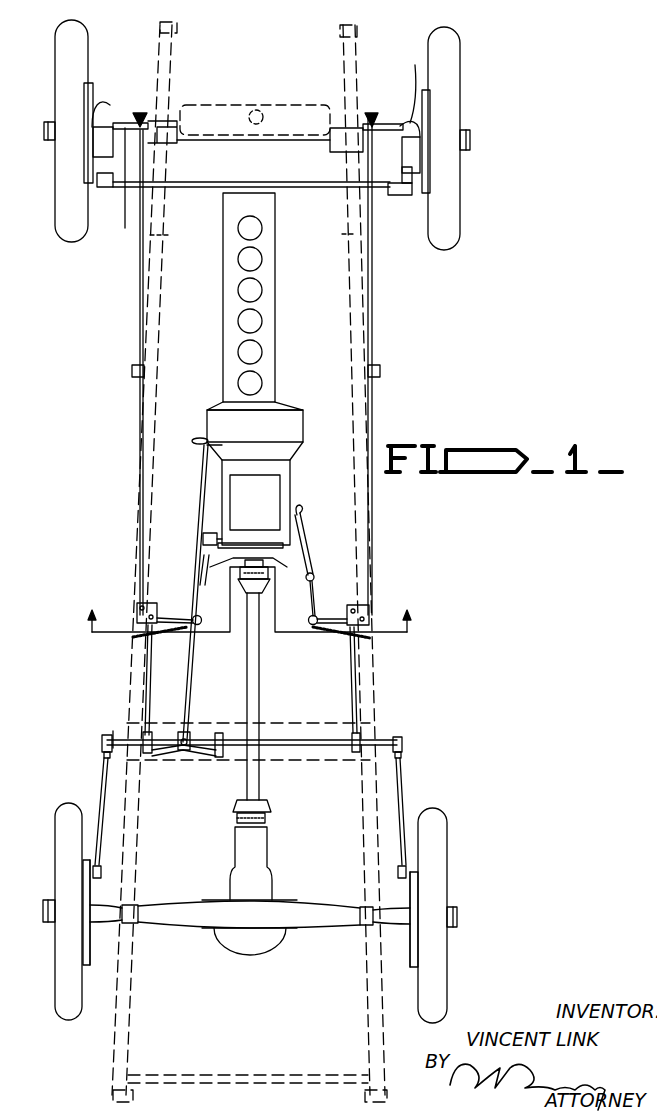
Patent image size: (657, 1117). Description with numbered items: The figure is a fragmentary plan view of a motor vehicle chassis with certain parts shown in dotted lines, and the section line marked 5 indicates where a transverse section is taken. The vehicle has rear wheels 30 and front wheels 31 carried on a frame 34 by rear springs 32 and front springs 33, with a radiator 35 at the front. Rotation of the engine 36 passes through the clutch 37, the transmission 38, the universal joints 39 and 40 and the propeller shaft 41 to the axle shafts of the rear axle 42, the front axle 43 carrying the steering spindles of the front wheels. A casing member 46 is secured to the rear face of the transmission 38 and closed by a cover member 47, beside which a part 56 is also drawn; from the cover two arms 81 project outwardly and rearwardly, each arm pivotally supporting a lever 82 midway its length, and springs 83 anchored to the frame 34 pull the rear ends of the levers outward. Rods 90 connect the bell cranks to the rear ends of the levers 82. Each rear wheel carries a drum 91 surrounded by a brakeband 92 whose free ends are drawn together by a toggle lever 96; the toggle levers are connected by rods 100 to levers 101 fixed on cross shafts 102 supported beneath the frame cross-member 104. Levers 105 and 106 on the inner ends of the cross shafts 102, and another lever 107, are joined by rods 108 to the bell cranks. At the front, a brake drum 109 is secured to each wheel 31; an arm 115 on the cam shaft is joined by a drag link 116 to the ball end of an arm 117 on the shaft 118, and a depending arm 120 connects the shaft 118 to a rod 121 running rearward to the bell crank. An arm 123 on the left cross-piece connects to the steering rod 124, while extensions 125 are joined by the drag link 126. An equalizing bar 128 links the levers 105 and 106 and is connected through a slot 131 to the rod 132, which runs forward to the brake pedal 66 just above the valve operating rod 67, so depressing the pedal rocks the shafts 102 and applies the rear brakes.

The section line 5- 5 is at (250, 599).
The rear wheels 30 is at (55, 835).
The front wheels 31 is at (57, 46).
The rear springs 32 is at (115, 1030).
The front springs 33 is at (167, 213).
The frame 34 is at (157, 305).
The radiator 35 is at (302, 107).
The engine 36 is at (277, 271).
The clutch 37 is at (304, 425).
The transmission 38 is at (291, 473).
The universal joint 39 is at (266, 594).
The universal joint 40 is at (268, 812).
The propeller shaft 41 is at (260, 680).
The rear axle 42 is at (175, 924).
The front axle 43 is at (218, 143).
The casing member 46 is at (284, 546).
The cover member 47 is at (288, 565).
The bracket 56 is at (203, 539).
The brake pedal 66 is at (198, 452).
The valve operating rod 67 is at (205, 488).
The arms 81 is at (203, 566).
The levers 82 is at (200, 626).
The springs 83 is at (170, 636).
The rods 90 is at (173, 620).
The drum 91 is at (98, 955).
The brakeband 92 is at (84, 940).
The toggle lever 96 is at (251, 884).
The rods 100 is at (103, 780).
The levers 101 is at (102, 738).
The cross shafts 102 is at (112, 724).
The frame cross-member 104 is at (285, 713).
The lever 105 is at (147, 754).
The lever 106 is at (222, 757).
The lever 107 is at (355, 753).
The rods 108 is at (147, 687).
The brake drum 109 is at (85, 88).
The arm 115 is at (110, 186).
The drag link 116 is at (95, 145).
The arm 117 is at (124, 120).
The shaft 118 is at (125, 120).
The arm 120 is at (135, 116).
The rod 121 is at (140, 278).
The arm 123 is at (97, 108).
The rod 124 is at (122, 217).
The extensions 125 is at (97, 176).
The drag link 126 is at (262, 183).
The equalizing bar 128 is at (204, 752).
The slot 131 is at (190, 732).
The rod 132 is at (189, 684).